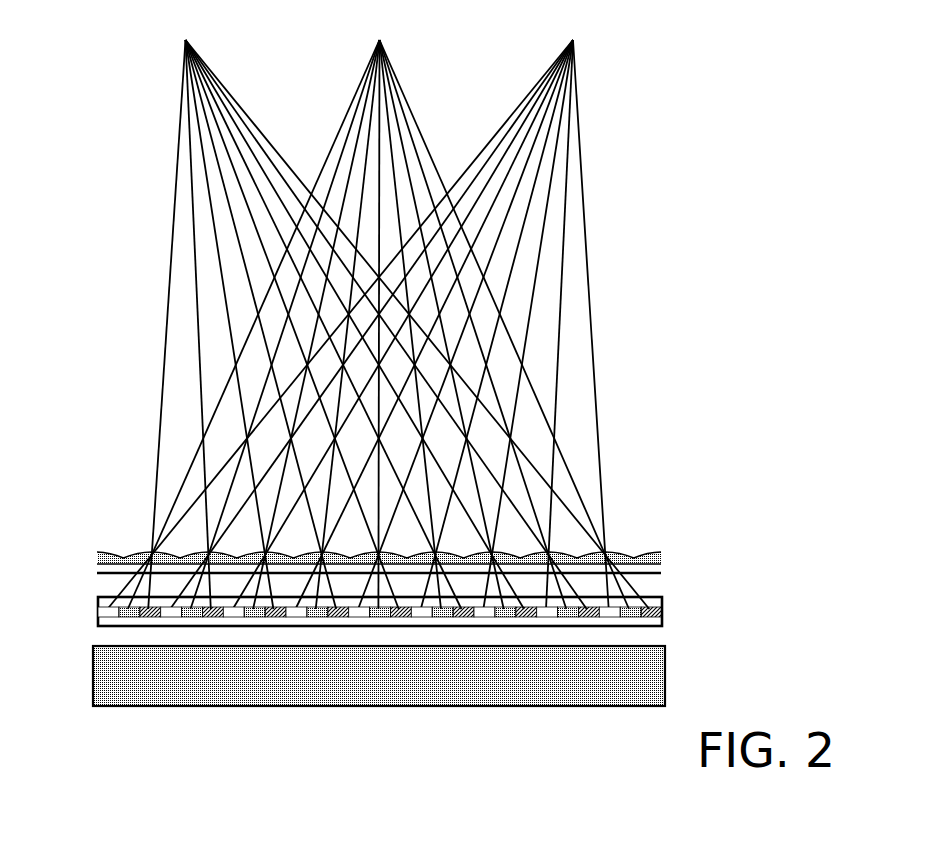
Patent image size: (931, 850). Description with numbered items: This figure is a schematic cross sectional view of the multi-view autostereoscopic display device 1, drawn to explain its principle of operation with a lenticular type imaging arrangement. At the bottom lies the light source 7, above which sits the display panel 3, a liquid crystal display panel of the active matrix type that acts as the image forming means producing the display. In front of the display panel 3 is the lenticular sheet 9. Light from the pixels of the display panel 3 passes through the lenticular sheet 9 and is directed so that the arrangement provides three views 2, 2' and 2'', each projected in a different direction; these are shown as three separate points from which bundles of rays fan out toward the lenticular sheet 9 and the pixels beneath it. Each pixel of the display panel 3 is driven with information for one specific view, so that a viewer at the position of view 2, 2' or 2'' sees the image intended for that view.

The multi-view autostereoscopic display device 1 is at (104, 88).
The view 2 is at (398, 308).
The view 2' is at (378, 308).
The view 2'' is at (358, 308).
The lenticular sheet 9 is at (661, 556).
The display panel 3 is at (662, 612).
The light source 7 is at (655, 675).